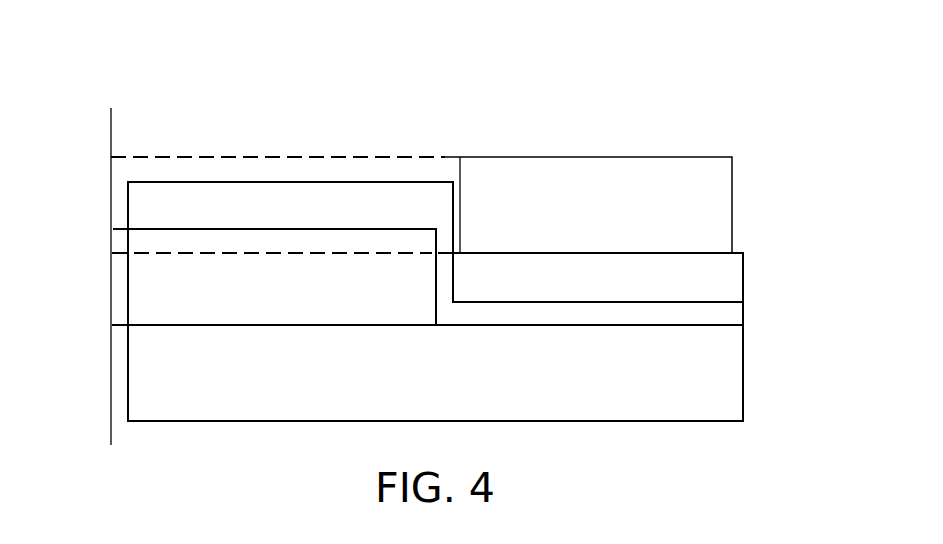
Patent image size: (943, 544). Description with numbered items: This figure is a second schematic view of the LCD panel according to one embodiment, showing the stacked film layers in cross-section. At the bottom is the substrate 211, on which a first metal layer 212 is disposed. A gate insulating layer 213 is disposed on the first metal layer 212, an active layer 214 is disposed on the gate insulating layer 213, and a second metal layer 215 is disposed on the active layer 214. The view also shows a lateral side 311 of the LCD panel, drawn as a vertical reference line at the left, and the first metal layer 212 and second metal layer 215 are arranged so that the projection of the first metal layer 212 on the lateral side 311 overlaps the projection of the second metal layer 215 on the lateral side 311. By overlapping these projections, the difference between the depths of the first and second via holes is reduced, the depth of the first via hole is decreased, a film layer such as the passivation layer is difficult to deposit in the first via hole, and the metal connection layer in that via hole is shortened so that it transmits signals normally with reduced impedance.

The lateral side 311 is at (110, 107).
The substrate 211 is at (700, 373).
The first metal layer 212 is at (153, 300).
The gate insulating layer 213 is at (717, 317).
The active layer 214 is at (692, 277).
The second metal layer 215 is at (692, 212).